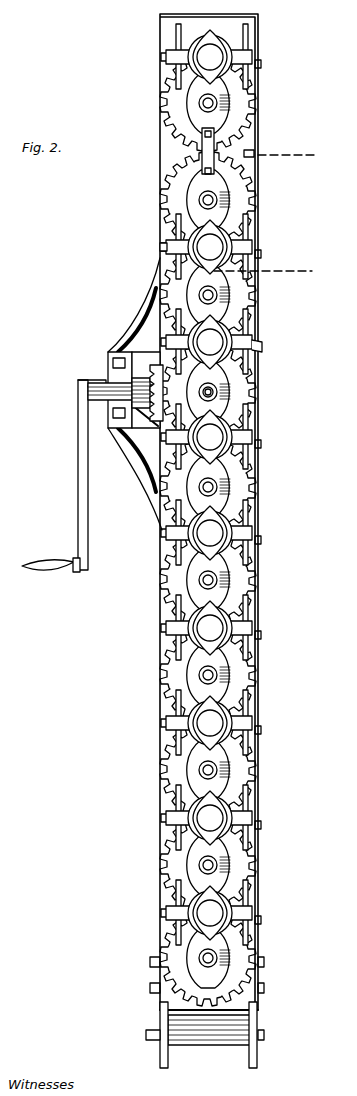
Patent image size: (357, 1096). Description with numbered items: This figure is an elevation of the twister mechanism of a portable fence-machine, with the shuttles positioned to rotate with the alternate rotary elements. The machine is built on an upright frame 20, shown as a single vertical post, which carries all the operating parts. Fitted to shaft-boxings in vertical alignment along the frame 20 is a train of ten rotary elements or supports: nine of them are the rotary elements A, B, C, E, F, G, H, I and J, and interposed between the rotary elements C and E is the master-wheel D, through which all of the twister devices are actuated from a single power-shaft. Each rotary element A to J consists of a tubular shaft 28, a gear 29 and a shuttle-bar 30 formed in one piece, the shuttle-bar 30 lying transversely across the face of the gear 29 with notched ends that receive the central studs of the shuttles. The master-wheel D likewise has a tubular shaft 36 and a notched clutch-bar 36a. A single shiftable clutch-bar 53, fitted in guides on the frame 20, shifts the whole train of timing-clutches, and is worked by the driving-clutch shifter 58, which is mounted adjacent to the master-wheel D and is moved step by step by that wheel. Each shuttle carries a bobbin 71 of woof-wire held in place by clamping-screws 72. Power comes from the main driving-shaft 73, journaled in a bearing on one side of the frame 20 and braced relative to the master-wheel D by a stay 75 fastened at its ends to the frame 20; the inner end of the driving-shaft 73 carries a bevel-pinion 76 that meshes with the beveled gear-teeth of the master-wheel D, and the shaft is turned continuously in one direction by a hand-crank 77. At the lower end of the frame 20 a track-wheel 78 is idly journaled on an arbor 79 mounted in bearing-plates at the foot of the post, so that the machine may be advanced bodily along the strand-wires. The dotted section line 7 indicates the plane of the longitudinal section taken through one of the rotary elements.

The section line 7 is at (272, 219).
The upright frame 20 is at (165, 150).
The tubular shaft 28 is at (205, 107).
The gear 29 is at (211, 530).
The shuttle-bar 30 is at (197, 101).
The tubular shaft 36 is at (136, 393).
The notched clutch-bar 36a is at (216, 391).
The clutch-bar 53 is at (250, 153).
The driving-clutch shifter 58 is at (258, 348).
The bobbin 71 is at (248, 37).
The clamping-screws 72 is at (167, 250).
The main driving-shaft 73 is at (112, 372).
The stay 75 is at (140, 318).
The bevel-pinion 76 is at (140, 414).
The hand-crank 77 is at (79, 455).
The track-wheel 78 is at (195, 1046).
The arbor 79 is at (146, 1035).
The rotary element A is at (250, 108).
The rotary element B is at (255, 197).
The rotary element C is at (243, 293).
The master-wheel D is at (243, 396).
The rotary element E is at (248, 488).
The rotary element F is at (248, 591).
The rotary element G is at (252, 668).
The rotary element H is at (243, 770).
The rotary element I is at (242, 862).
The rotary element J is at (250, 958).